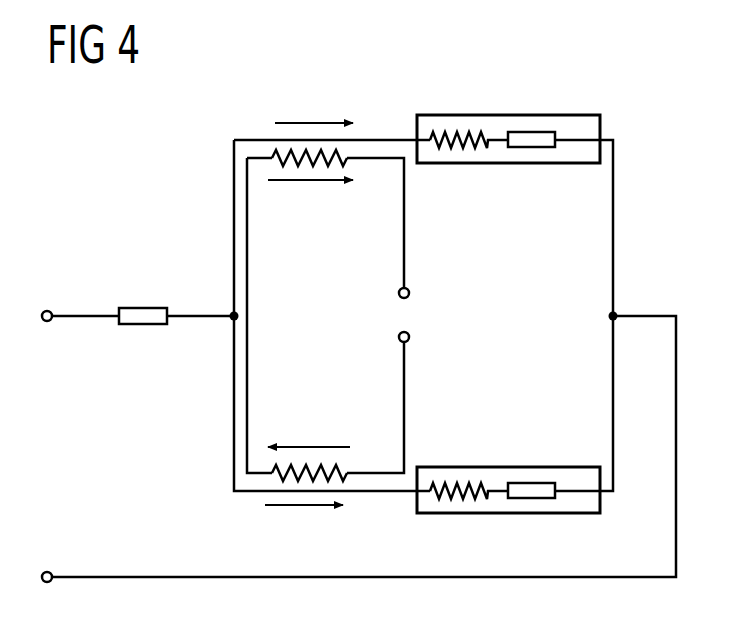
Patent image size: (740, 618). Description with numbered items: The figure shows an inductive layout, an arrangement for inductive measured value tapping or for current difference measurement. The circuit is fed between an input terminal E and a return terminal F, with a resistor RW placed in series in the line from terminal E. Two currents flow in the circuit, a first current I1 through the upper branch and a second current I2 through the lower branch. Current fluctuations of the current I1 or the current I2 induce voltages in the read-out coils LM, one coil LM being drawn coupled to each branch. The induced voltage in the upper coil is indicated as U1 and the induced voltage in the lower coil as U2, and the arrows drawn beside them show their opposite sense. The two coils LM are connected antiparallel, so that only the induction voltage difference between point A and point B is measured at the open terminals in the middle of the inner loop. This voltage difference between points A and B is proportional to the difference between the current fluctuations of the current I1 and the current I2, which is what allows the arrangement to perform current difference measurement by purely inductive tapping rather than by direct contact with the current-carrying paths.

The input terminal E is at (48, 310).
The terminal F is at (48, 571).
The resistor R_W RW is at (143, 307).
The point A is at (410, 293).
The point B is at (410, 337).
The readout coil LM is at (281, 151).
The first current I1 is at (314, 102).
The second current I2 is at (304, 529).
The voltage U1 = LM I'1 U1 is at (324, 203).
The voltage U2 = LM I'2 U2 is at (325, 422).